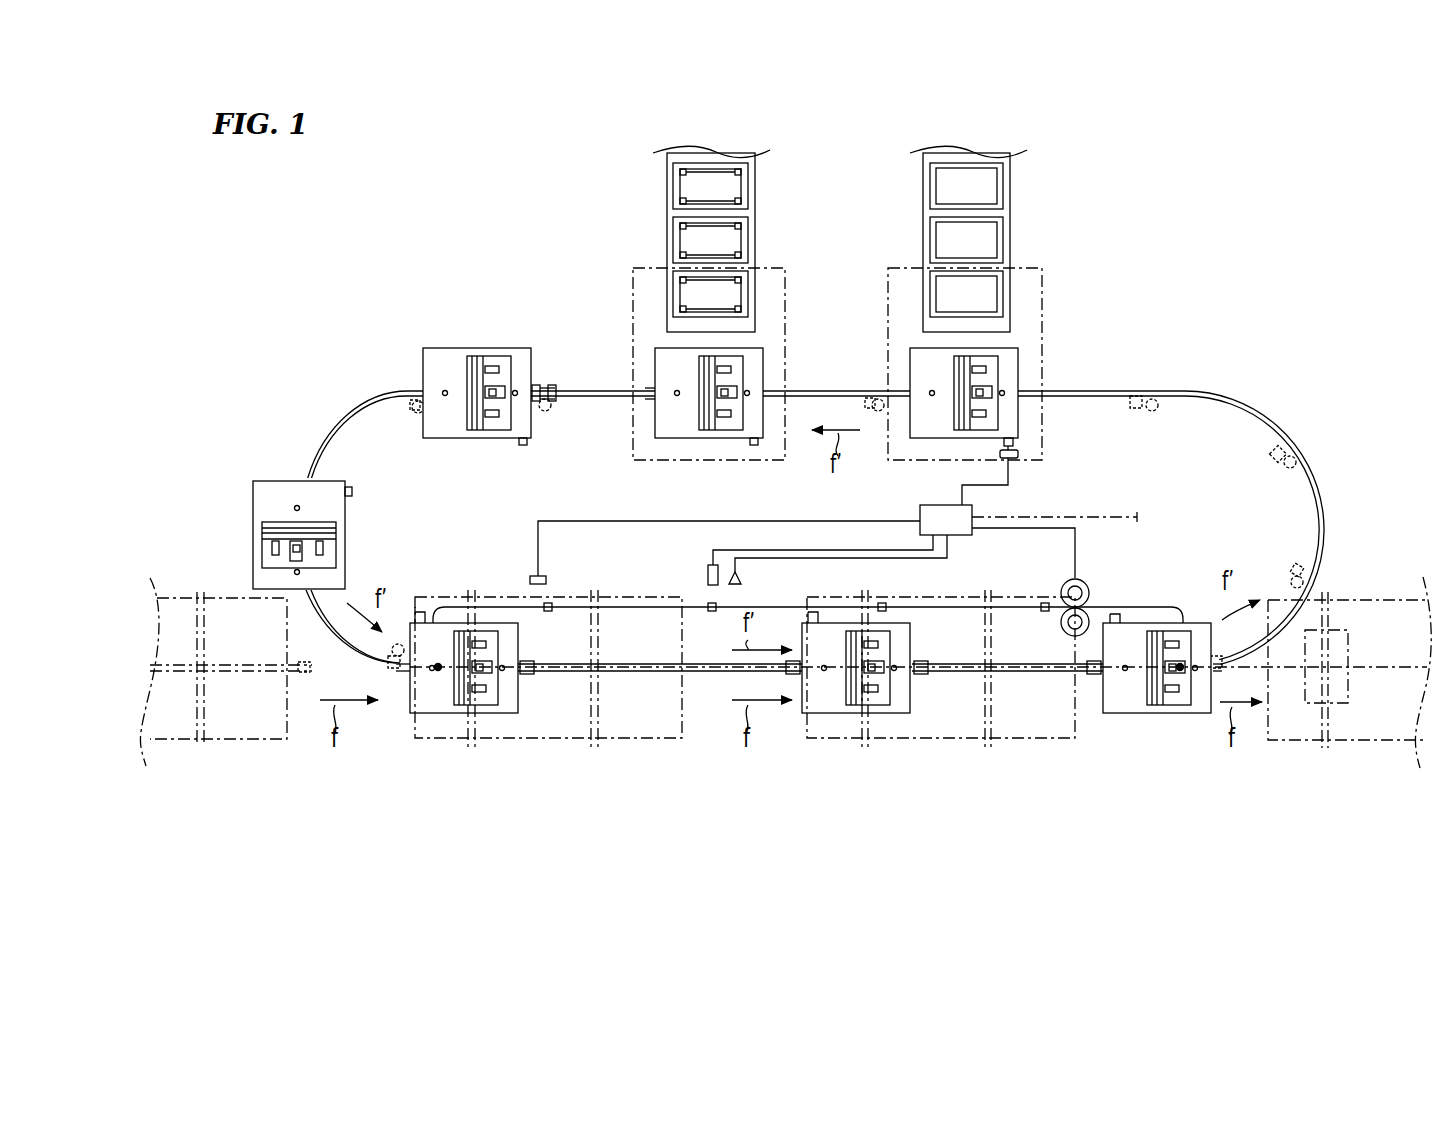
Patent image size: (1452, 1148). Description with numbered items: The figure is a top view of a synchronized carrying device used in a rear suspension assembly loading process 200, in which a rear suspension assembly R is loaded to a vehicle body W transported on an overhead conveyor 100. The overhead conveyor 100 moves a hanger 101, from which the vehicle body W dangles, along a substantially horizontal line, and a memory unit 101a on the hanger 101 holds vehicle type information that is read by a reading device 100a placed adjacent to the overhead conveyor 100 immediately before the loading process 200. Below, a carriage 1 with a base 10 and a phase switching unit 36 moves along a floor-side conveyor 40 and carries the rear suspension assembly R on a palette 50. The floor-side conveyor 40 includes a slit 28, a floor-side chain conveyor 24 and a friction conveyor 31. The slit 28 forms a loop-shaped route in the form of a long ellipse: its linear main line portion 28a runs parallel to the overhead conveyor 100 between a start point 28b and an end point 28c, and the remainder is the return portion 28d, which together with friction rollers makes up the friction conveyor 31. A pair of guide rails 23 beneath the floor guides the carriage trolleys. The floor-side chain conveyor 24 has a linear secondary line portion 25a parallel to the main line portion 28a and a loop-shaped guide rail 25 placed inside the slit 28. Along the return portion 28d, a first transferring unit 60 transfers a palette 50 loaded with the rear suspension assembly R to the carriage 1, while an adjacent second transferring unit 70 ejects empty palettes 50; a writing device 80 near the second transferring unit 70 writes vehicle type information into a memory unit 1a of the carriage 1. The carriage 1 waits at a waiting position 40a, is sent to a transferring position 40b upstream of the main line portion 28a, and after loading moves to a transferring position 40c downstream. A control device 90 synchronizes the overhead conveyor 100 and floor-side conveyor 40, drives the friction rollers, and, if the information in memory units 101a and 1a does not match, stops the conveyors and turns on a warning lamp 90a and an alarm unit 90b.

The carriage 1 is at (770, 370).
The memory unit 1a is at (1015, 446).
The base 10 is at (991, 371).
The guide rails 23 is at (364, 406).
The slit 28 is at (811, 496).
The floor-side chain conveyor 24 is at (443, 476).
The guide rail 25 is at (498, 607).
The secondary line portion 25a is at (809, 727).
The main line portion 28a is at (726, 673).
The start point 28b is at (436, 672).
The end point 28c is at (1181, 672).
The return portion 28d is at (593, 393).
The friction conveyor 31 is at (477, 396).
The phase switching unit 36 is at (924, 365).
The floor-side conveyor 40 is at (440, 605).
The waiting position 40a is at (238, 492).
The transferring position 40b is at (455, 740).
The transferring position 40c is at (1168, 740).
The palette 50 is at (713, 239).
The first transferring unit 60 is at (685, 477).
The second transferring unit 70 is at (1000, 297).
The writing device 80 is at (1012, 460).
The control device 90 is at (920, 518).
The warning lamp 90a is at (708, 575).
The alarm unit 90b is at (742, 580).
The overhead conveyor 100 is at (785, 730).
The reading device 100a is at (538, 575).
The hanger 101 is at (744, 690).
The memory unit 101a is at (203, 595).
The rear suspension assembly loading process 200 is at (523, 792).
The rear suspension assembly R is at (668, 281).
The vehicle body W is at (263, 742).